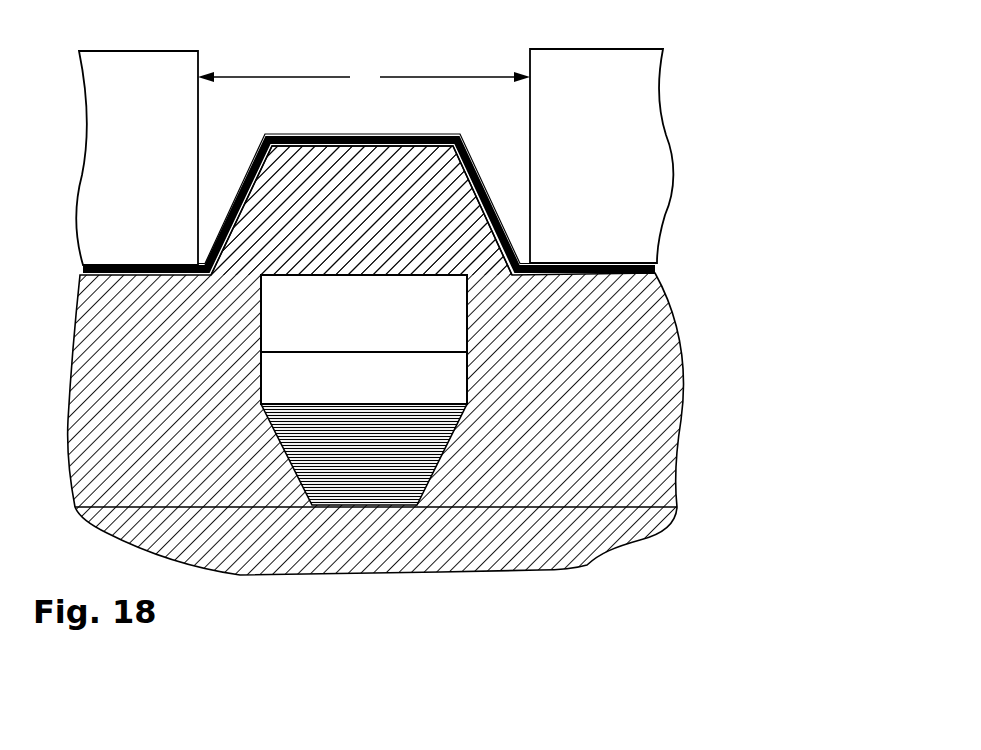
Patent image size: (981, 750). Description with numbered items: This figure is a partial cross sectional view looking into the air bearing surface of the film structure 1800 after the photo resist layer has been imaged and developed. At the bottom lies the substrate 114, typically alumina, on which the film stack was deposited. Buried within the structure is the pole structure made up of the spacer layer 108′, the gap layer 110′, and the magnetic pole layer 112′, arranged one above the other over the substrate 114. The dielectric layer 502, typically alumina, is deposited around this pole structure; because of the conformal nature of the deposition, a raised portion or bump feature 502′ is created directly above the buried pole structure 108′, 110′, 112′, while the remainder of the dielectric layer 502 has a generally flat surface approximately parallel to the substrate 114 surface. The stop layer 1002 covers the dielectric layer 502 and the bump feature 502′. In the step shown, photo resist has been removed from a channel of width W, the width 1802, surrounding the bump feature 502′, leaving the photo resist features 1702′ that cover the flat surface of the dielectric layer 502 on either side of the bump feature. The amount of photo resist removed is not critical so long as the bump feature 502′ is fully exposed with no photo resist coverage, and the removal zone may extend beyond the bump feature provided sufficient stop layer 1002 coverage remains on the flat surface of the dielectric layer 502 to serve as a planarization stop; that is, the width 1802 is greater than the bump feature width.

The photo resist features 1702′ is at (104, 199).
The channel width W 1802 is at (373, 87).
The stop layer 1002 is at (606, 262).
The bump feature 502′ is at (337, 217).
The dielectric layer 502 is at (545, 394).
The spacer layer 108′ is at (337, 329).
The gap layer 110′ is at (337, 396).
The pole layer 112′ is at (349, 476).
The substrate 114 is at (356, 556).
The film structure 1800 is at (642, 563).